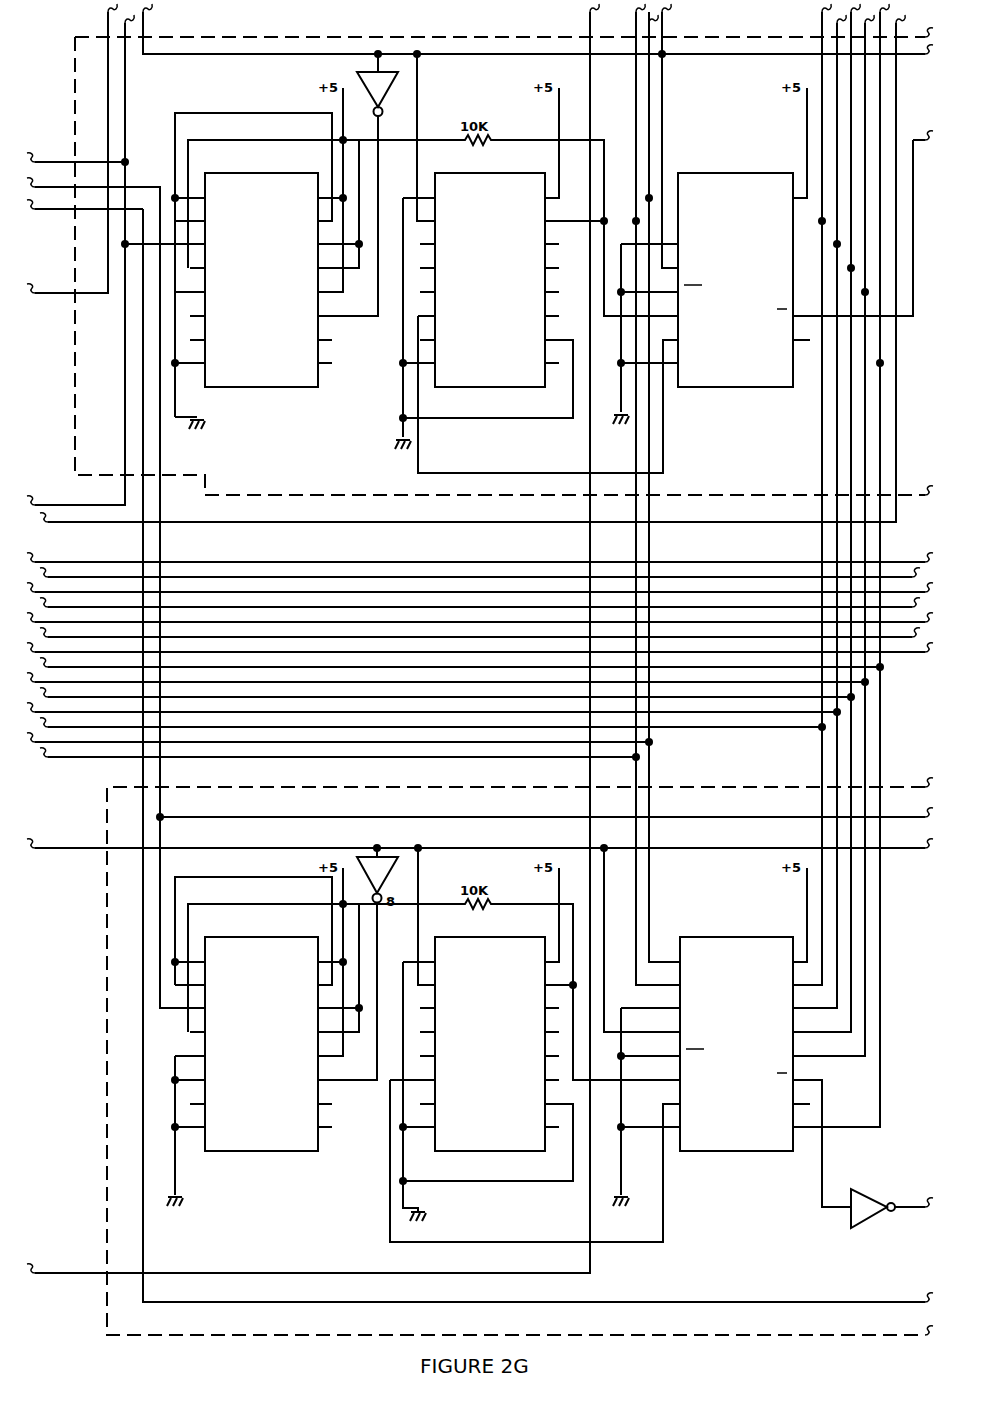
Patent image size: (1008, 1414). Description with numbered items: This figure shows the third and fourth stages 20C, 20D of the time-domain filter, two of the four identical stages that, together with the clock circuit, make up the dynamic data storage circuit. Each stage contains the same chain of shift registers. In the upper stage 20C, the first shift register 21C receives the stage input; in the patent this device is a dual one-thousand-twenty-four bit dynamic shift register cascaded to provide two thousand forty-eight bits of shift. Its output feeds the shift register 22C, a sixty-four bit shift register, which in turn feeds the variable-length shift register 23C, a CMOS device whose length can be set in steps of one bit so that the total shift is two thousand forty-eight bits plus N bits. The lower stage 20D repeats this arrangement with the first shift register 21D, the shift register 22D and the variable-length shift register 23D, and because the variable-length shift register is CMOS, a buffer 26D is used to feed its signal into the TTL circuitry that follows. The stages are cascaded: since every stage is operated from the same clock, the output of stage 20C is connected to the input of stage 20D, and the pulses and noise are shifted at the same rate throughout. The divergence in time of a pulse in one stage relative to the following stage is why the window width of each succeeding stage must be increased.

The third stage 20C is at (350, 495).
The fourth stage 20D is at (107, 977).
The first shift register 21C is at (235, 387).
The first shift register 21D is at (255, 1151).
The shift register 22C is at (468, 387).
The shift register 22D is at (467, 1151).
The variable-length shift register 23C is at (713, 387).
The variable-length shift register 23D is at (770, 1151).
The buffer 26D is at (880, 1215).